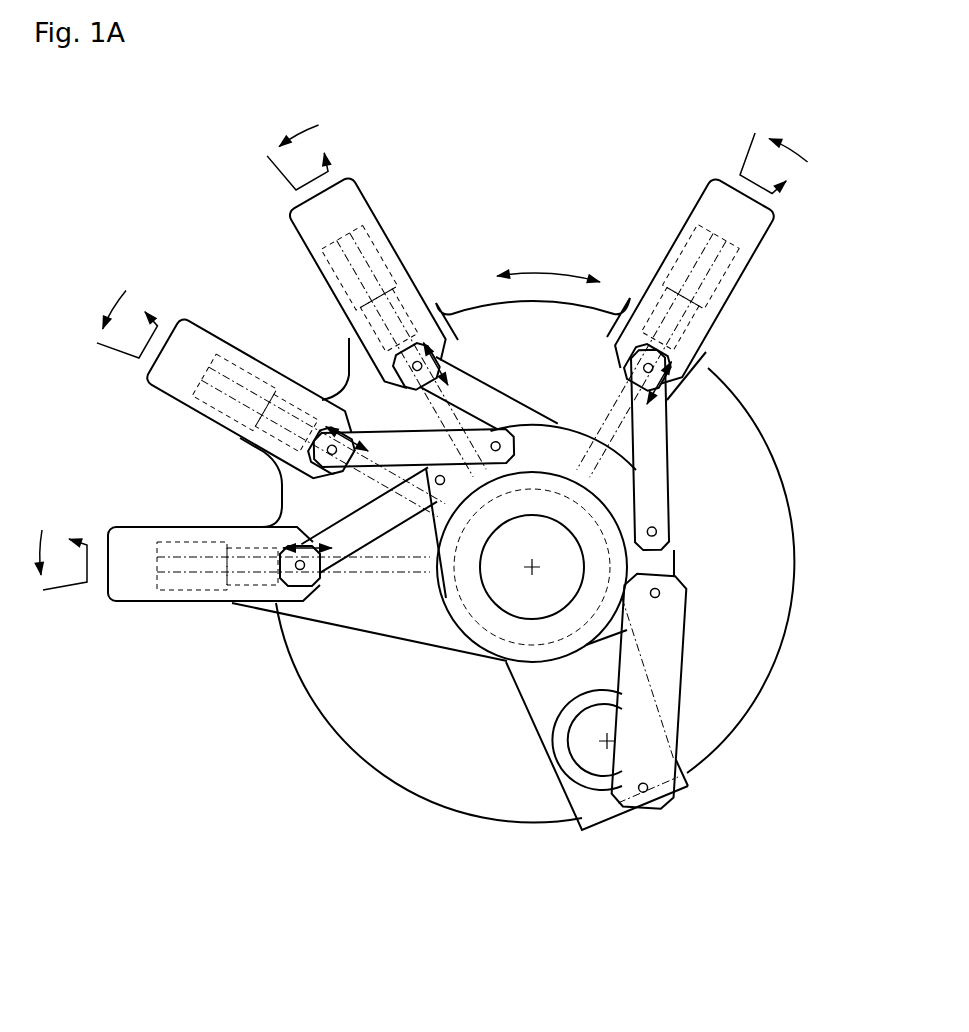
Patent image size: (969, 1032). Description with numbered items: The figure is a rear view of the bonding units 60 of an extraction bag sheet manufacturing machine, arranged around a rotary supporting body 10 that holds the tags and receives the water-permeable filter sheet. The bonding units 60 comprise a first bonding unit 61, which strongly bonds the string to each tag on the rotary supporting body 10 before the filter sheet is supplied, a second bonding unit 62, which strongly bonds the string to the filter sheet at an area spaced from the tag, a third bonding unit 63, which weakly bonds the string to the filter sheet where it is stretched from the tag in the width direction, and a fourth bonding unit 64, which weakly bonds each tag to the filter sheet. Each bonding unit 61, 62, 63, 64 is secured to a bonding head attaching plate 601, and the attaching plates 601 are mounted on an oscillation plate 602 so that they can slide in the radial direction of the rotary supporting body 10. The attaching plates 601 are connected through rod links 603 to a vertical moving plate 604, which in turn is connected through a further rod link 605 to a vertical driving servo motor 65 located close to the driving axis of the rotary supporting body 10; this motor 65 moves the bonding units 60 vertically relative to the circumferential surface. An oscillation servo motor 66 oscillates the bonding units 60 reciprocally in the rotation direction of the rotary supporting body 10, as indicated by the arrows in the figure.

The rotary supporting body 10 is at (725, 717).
The bonding units 60 is at (441, 347).
The first bonding unit 61 is at (694, 347).
The second bonding unit 62 is at (383, 249).
The third bonding unit 63 is at (247, 375).
The fourth bonding unit 64 is at (177, 542).
The vertical driving servo motor 65 is at (573, 758).
The oscillation servo motor 66 is at (503, 590).
The bonding head attaching plate 601 is at (755, 235).
The oscillation plate 602 is at (692, 397).
The rod link 603 is at (653, 447).
The vertical moving plate 604 is at (667, 560).
The rod link 605 is at (675, 663).